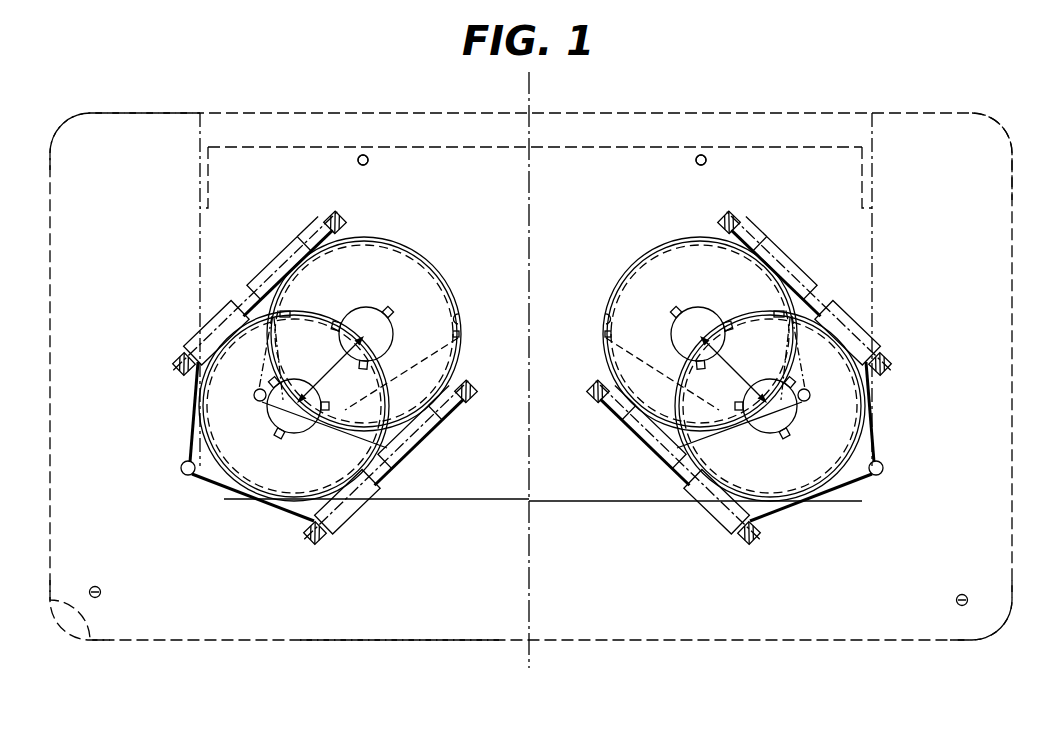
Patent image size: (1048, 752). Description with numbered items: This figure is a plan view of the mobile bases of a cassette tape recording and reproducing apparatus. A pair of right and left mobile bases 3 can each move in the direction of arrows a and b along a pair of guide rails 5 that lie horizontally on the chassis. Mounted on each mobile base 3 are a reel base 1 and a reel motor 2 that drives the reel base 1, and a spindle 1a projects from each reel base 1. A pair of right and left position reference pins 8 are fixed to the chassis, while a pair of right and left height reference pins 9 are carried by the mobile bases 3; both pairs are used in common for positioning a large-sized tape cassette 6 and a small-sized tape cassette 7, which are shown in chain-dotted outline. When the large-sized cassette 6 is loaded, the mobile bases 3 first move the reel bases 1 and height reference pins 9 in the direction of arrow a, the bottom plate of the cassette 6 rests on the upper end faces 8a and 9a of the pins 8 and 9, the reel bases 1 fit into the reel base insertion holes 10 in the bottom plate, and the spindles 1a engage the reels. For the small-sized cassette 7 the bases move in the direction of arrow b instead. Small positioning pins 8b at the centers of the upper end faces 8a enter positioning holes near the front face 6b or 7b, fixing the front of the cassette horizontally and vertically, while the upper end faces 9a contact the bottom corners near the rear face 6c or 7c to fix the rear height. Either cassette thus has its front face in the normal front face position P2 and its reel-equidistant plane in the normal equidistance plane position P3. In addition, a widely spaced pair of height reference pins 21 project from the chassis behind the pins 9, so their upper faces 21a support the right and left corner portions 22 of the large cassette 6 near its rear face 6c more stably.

The reel base 1 is at (402, 262).
The spindle 1a is at (305, 430).
The reel motor 2 is at (424, 256).
The mobile base 3 is at (229, 490).
The guide rail 5 is at (246, 292).
The large-sized tape cassette 6 is at (693, 641).
The front face 6b is at (193, 112).
The rear face 6c is at (405, 641).
The small-sized tape cassette 7 is at (477, 510).
The front face 7b is at (466, 112).
The rear face 7c is at (598, 504).
The position reference pin 8 is at (363, 155).
The upper end face 8a is at (369, 162).
The positioning pin 8b is at (358, 163).
The height reference pin 9 is at (187, 478).
The upper end face 9a is at (186, 456).
The reel base insertion hole 10 is at (464, 336).
The height reference pin 21 is at (95, 586).
The upper face 21a is at (101, 590).
The corner portion 22 is at (106, 626).
The arrow a is at (304, 386).
The arrow b is at (348, 358).
The normal front face position P2 is at (994, 113).
The normal equidistance plane position P3 is at (531, 222).